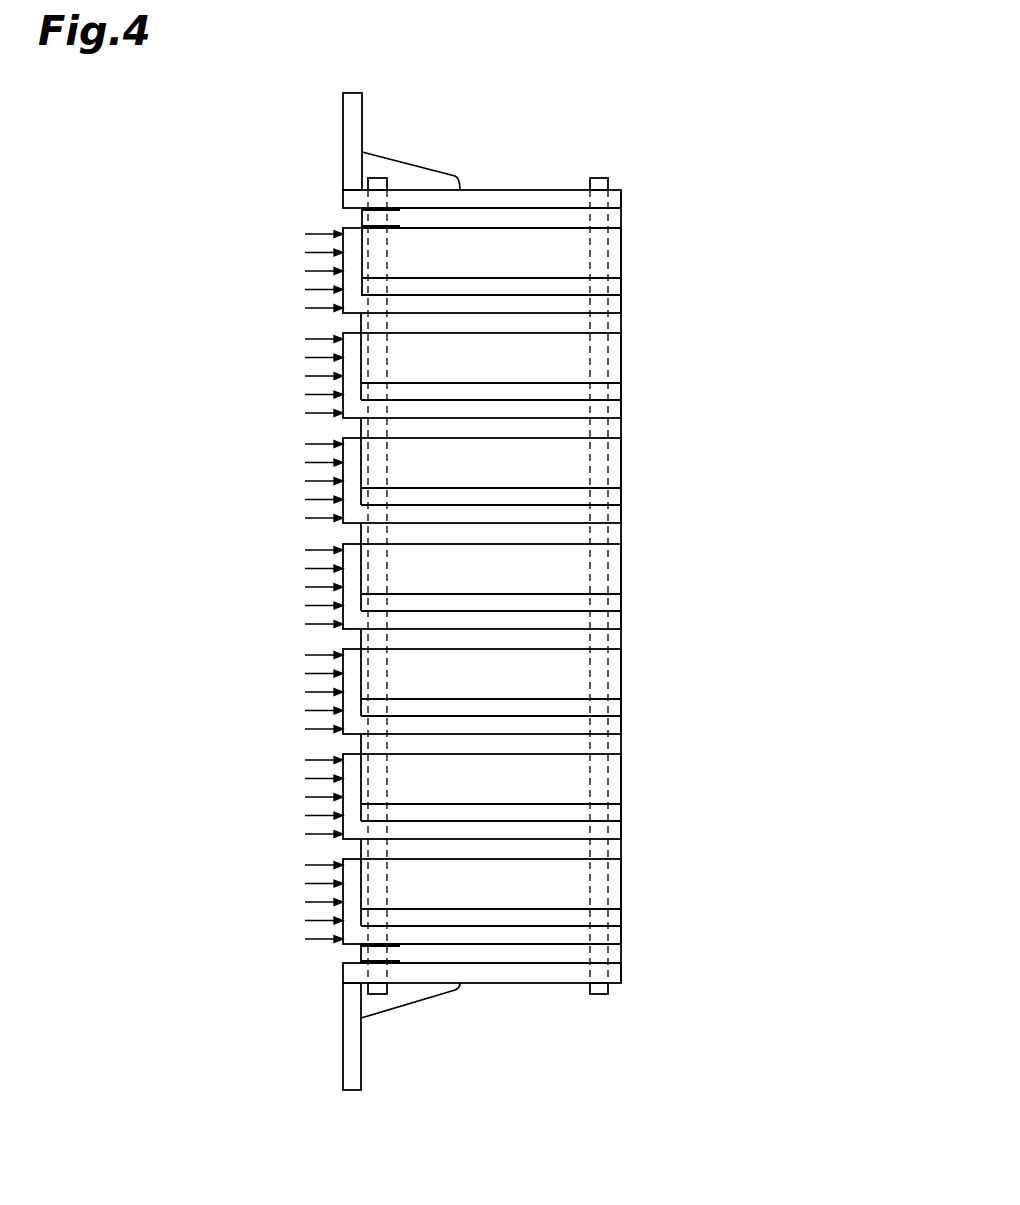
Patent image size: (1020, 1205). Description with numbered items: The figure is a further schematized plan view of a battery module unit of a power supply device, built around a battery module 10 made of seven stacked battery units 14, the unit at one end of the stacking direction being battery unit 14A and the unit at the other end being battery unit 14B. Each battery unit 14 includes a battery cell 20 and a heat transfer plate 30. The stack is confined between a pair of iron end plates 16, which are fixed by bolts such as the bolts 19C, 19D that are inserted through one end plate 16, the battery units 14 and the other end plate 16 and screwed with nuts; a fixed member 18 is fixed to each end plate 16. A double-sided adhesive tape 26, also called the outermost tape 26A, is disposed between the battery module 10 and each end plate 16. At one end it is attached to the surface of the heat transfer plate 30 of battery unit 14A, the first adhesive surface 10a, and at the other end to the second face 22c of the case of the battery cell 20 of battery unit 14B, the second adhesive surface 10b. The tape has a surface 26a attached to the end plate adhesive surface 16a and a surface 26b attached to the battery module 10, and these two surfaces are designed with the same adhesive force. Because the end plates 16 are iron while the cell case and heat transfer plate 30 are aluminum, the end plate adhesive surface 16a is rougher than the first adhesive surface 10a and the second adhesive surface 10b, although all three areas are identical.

The battery module 10 is at (113, 256).
The first adhesive surface 10a is at (517, 945).
The second adhesive surface 10b is at (523, 228).
The battery unit 14 is at (371, 586).
The battery unit 14A is at (258, 881).
The battery unit 14B is at (258, 270).
The end plate 16 is at (621, 198).
The end plate adhesive surface 16a is at (552, 212).
The fixed member 18 is at (362, 123).
The bolt 19C is at (378, 178).
The bolt 19D is at (598, 177).
The battery cell 20 is at (621, 258).
The second face 22c is at (523, 228).
The double-sided adhesive tape 26 is at (621, 323).
The outermost tape 26A is at (621, 218).
The surface 26a is at (398, 208).
The surface 26b is at (398, 231).
The heat transfer plate 30 is at (621, 300).